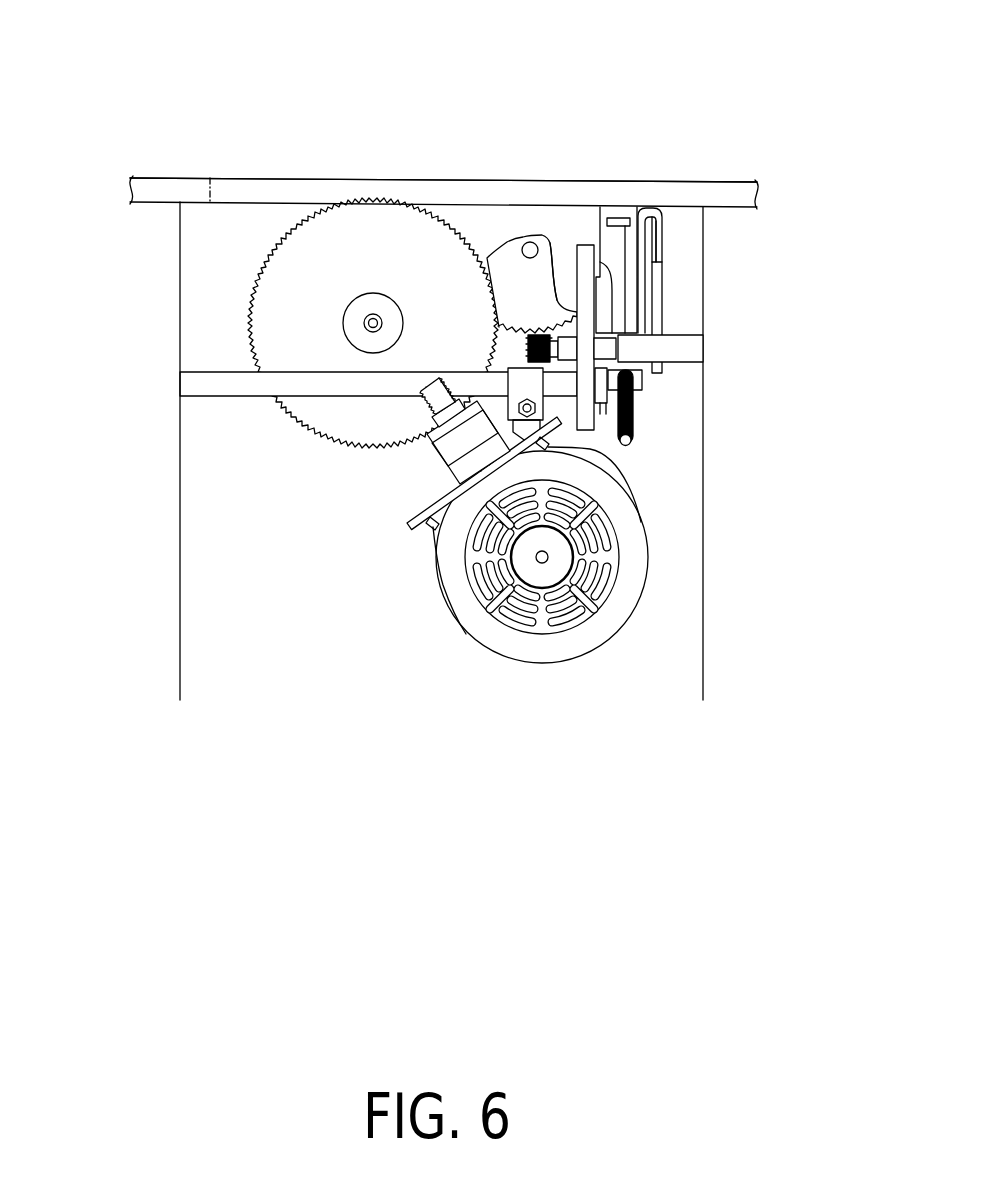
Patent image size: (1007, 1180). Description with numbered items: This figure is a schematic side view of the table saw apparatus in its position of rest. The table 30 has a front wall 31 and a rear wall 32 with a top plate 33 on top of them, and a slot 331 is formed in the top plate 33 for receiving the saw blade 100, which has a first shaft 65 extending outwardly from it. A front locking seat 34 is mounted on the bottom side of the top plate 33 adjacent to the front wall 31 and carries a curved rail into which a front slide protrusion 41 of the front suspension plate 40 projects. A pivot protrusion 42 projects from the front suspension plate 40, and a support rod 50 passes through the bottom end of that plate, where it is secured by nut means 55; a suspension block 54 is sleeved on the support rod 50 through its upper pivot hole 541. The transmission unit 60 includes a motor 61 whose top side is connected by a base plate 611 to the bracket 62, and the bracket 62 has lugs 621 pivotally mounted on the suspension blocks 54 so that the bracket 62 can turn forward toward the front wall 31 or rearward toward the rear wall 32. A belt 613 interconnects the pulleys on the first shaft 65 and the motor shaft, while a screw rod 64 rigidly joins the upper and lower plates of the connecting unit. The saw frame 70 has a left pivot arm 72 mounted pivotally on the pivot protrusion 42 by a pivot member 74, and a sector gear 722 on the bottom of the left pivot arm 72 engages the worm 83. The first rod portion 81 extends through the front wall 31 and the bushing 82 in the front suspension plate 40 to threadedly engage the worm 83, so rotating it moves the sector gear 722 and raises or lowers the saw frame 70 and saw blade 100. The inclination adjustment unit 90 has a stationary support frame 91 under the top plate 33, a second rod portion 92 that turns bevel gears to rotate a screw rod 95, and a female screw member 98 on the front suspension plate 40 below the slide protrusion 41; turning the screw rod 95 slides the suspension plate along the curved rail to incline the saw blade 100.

The table 30 is at (153, 178).
The front wall 31 is at (703, 687).
The rear wall 32 is at (180, 603).
The top plate 33 is at (188, 190).
The slot 331 is at (250, 185).
The front locking seat 34 is at (633, 313).
The front suspension plate 40 is at (677, 207).
The front slide protrusion 41 is at (590, 243).
The pivot protrusion 42 is at (552, 238).
The support rod 50 is at (208, 397).
The suspension block 54 is at (517, 387).
The upper pivot hole 541 is at (607, 410).
The nut means 55 is at (585, 365).
The transmission unit 60 is at (508, 623).
The motor 61 is at (507, 627).
The base plate 611 is at (430, 523).
The belt 613 is at (437, 448).
The bracket 62 is at (550, 542).
The lugs 621 is at (550, 447).
The screw rod 64 is at (370, 475).
The first shaft 65 is at (365, 323).
The saw frame 70 is at (487, 166).
The left pivot arm 72 is at (520, 332).
The sector gear 722 is at (498, 247).
The pivot member 74 is at (529, 241).
The first rod portion 81 is at (752, 356).
The second rod portion 92 is at (683, 348).
The bushing 82 is at (633, 415).
The worm 83 is at (528, 345).
The inclination adjustment unit 90 is at (729, 234).
The stationary support frame 91 is at (663, 255).
The screw rod 95 is at (633, 393).
The female screw member 98 is at (640, 378).
The saw blade 100 is at (260, 266).